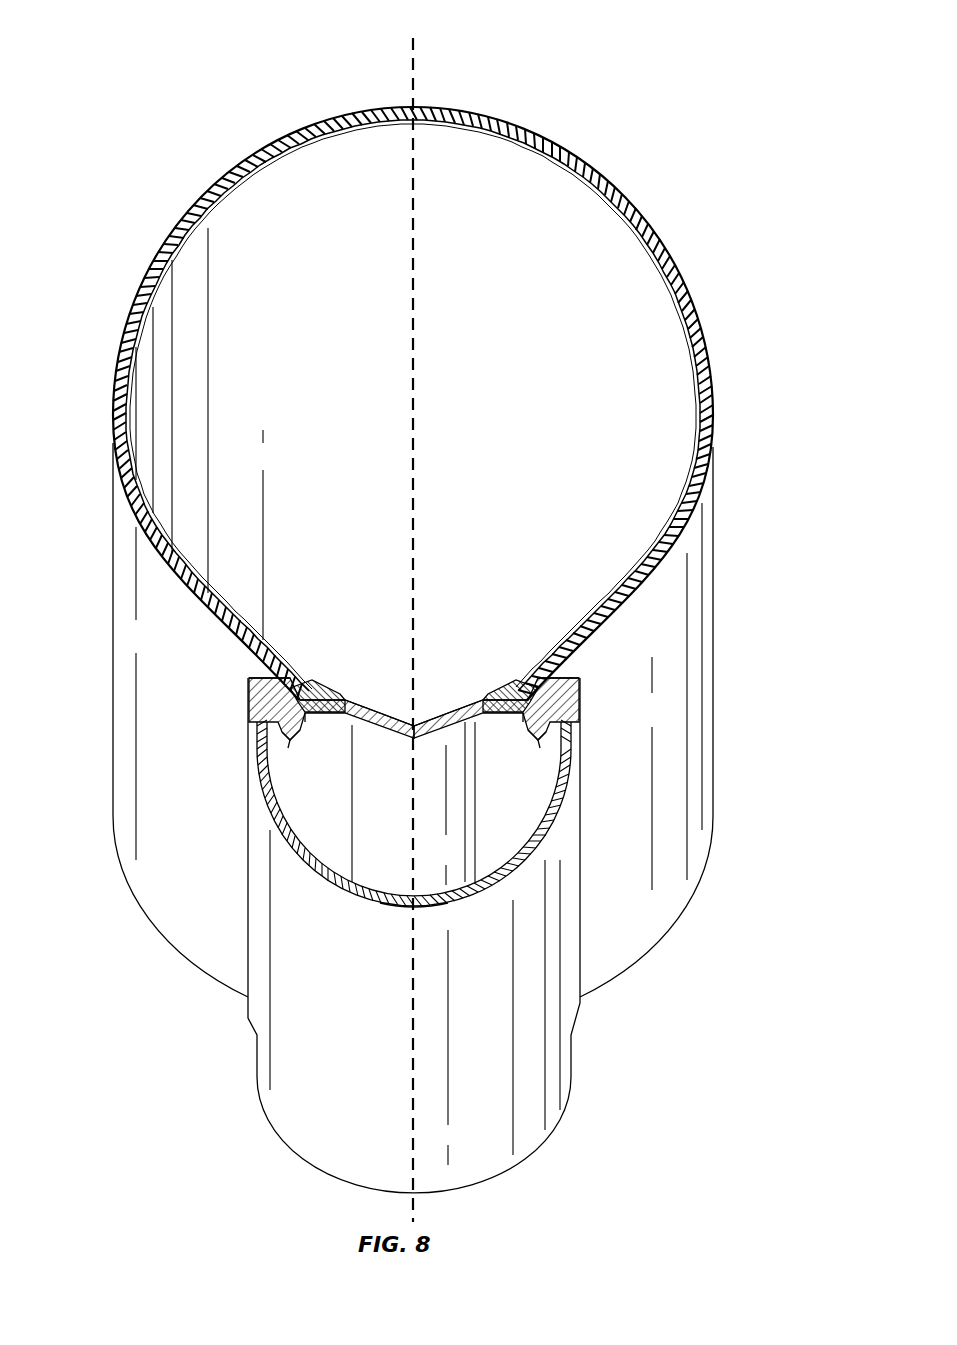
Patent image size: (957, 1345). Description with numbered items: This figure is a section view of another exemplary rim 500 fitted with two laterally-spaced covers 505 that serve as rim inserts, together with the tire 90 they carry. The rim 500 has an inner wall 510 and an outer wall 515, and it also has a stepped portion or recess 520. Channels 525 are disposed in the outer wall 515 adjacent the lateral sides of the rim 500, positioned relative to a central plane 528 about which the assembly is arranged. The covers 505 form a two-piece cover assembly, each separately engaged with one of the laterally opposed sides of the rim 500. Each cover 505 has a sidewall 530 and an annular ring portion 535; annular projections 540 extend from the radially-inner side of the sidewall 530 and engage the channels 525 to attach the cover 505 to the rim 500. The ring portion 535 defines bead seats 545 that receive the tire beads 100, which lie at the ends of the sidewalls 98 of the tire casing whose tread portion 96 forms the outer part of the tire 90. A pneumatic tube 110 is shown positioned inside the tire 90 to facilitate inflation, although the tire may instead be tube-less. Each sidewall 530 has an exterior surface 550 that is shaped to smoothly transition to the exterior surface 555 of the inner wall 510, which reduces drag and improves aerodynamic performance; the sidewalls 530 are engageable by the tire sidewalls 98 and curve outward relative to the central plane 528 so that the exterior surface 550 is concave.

The central plane 528 is at (416, 48).
The tread portion 96 is at (450, 110).
The tire 90 is at (577, 152).
The pneumatic tube 110 is at (630, 592).
The sidewalls 98 is at (698, 567).
The tire beads 100 is at (306, 695).
The rim 500 is at (553, 1128).
The covers 505 is at (248, 688).
The sidewall 530 is at (257, 679).
The bead seats 545 is at (312, 712).
The annular ring portion 535 is at (345, 710).
The outer wall 515 is at (386, 740).
The annular projections 540 is at (272, 733).
The recess 520 is at (320, 726).
The channels 525 is at (285, 745).
The exterior surface 550 is at (258, 805).
The exterior surface 555 is at (265, 855).
The inner wall 510 is at (353, 895).